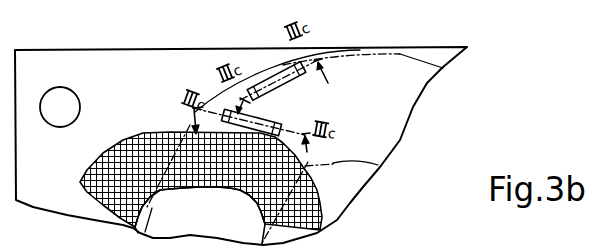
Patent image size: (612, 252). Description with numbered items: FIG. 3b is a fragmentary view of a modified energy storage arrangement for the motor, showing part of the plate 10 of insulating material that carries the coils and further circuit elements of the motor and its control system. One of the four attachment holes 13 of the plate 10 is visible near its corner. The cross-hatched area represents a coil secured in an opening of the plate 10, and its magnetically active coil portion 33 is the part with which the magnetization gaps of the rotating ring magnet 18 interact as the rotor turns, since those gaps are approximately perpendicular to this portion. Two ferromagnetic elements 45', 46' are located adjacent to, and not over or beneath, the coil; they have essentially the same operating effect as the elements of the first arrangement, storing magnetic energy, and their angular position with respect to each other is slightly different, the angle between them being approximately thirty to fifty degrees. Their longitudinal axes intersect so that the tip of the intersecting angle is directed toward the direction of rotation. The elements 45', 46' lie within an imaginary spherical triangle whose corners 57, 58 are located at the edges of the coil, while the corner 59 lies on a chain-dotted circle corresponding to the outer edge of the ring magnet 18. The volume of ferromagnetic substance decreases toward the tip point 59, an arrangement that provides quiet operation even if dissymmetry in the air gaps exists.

The plate 10 is at (131, 68).
The attachment holes 13 is at (61, 108).
The ring magnet 18 is at (416, 63).
The corner of imaginary spherical triangle 59 is at (360, 48).
The ferromagnetic element 46' is at (282, 62).
The ferromagnetic element 45' is at (252, 122).
The corner of imaginary spherical triangle 57 is at (190, 130).
The corner of imaginary spherical triangle 58 is at (305, 165).
The magnetically active coil portion 33 is at (200, 215).